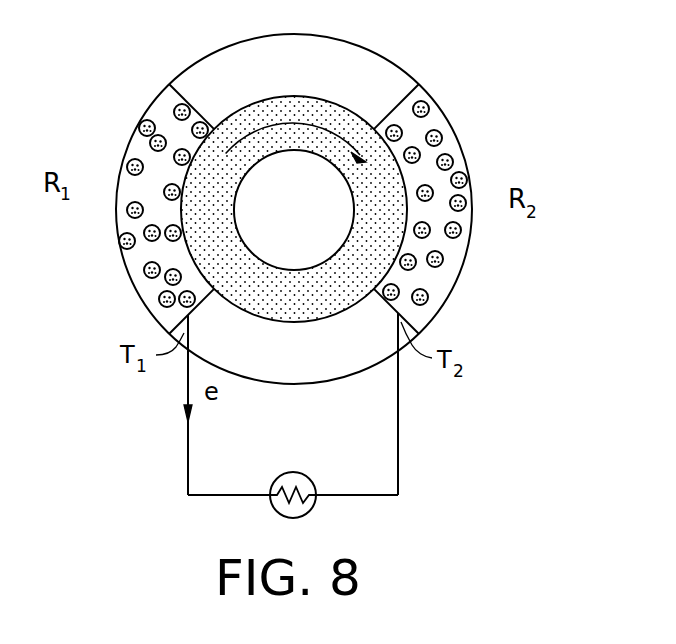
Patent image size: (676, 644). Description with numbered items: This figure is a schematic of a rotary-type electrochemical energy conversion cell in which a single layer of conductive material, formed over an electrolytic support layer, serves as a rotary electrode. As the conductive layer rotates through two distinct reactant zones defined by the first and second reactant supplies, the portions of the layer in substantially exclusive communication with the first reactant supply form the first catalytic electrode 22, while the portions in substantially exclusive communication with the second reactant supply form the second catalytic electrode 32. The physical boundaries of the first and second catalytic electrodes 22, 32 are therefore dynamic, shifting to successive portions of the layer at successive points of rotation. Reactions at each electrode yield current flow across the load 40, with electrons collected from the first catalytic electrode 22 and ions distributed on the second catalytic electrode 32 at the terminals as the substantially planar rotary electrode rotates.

The first catalytic electrode 22 is at (156, 113).
The second catalytic electrode 32 is at (443, 119).
The load 40 is at (312, 478).